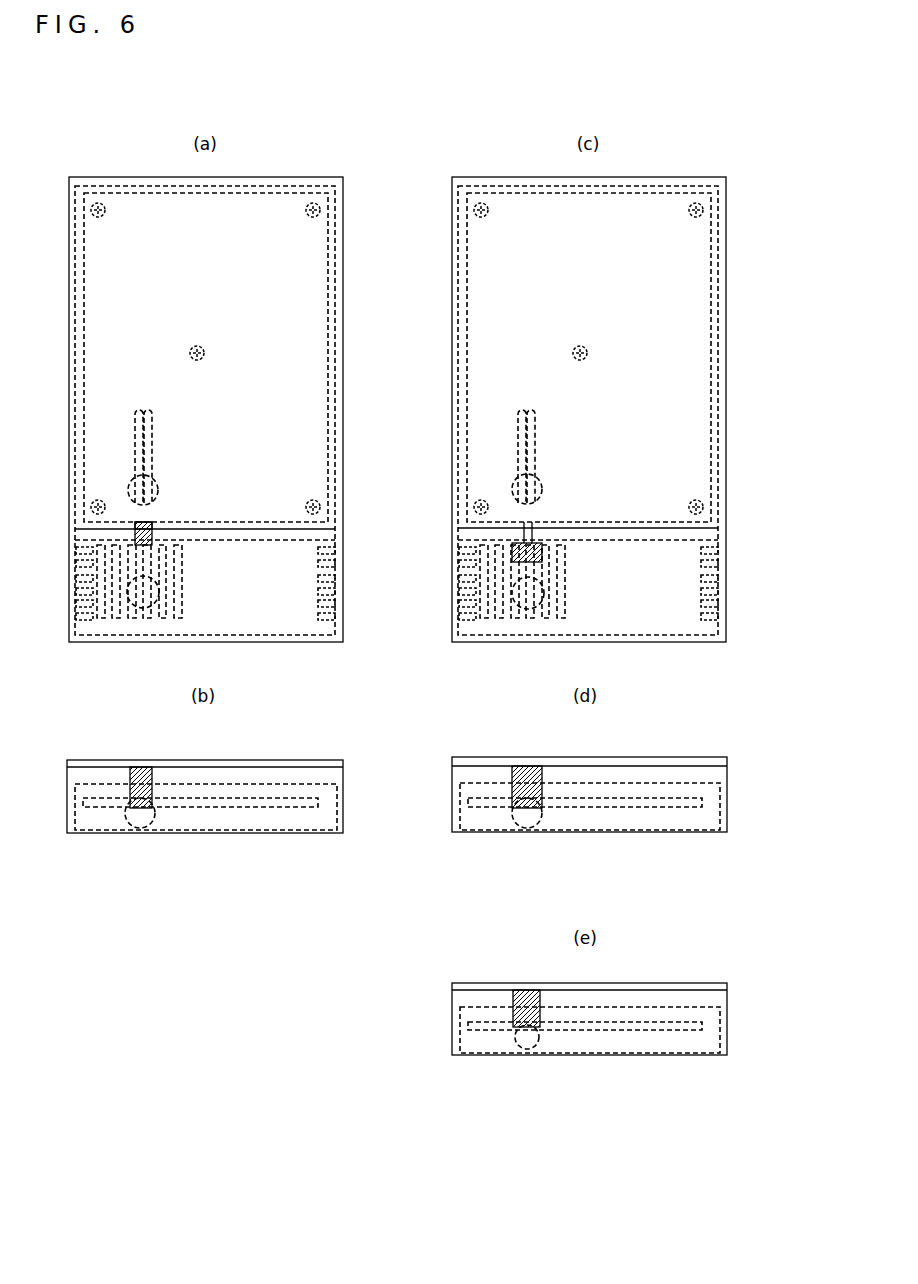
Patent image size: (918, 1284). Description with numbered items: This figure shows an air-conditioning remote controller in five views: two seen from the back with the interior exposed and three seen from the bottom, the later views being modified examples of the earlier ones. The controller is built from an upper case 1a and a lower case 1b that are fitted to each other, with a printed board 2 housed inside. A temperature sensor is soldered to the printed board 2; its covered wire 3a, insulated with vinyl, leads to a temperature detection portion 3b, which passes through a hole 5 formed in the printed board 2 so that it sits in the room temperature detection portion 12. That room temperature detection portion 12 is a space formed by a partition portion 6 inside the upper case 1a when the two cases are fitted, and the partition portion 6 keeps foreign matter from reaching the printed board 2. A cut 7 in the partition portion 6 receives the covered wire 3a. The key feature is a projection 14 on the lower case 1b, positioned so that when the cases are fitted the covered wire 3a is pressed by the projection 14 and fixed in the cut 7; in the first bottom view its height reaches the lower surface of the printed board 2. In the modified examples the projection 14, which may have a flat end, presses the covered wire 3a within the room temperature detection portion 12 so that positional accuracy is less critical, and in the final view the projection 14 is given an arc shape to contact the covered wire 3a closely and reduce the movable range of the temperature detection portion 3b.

The upper case 1a is at (343, 788).
The lower case 1b is at (343, 278).
The printed board 2 is at (210, 800).
The covered wire 3a is at (155, 452).
The temperature detection portion 3b is at (157, 584).
The hole 5 is at (153, 482).
The partition portion 6 is at (220, 528).
The cut 7 is at (153, 527).
The room temperature detection portion 12 is at (303, 604).
The projection 14 is at (152, 545).